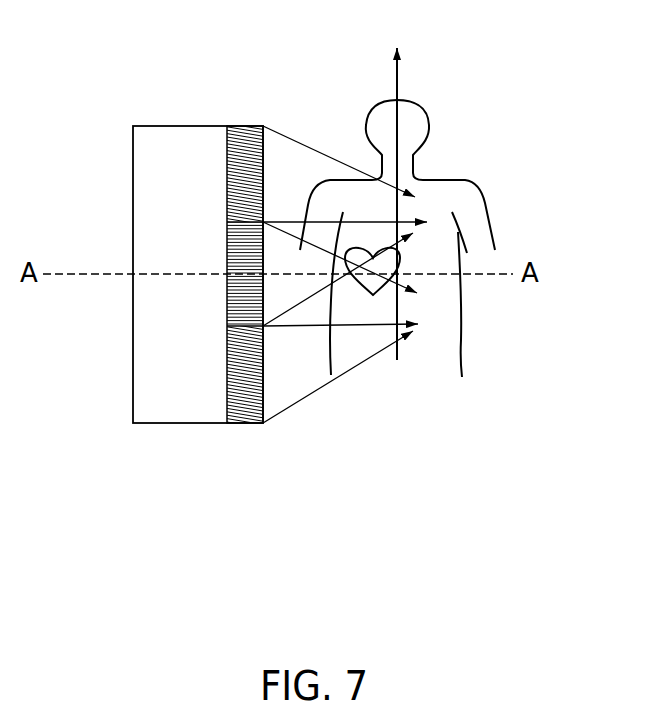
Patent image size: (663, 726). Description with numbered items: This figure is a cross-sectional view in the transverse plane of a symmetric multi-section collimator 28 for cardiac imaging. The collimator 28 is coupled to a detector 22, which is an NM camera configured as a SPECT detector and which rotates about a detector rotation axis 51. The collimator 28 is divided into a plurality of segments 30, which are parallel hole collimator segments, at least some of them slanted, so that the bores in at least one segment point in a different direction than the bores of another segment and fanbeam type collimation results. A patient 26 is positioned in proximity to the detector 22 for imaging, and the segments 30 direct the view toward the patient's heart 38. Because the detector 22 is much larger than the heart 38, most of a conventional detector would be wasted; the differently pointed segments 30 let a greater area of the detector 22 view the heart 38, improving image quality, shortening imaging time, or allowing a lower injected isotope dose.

The detector 22 is at (181, 117).
The collimator 28 is at (248, 120).
The segments 30 is at (263, 126).
The detector rotation axis 51 is at (399, 77).
The patient 26 is at (465, 179).
The heart 38 is at (400, 262).